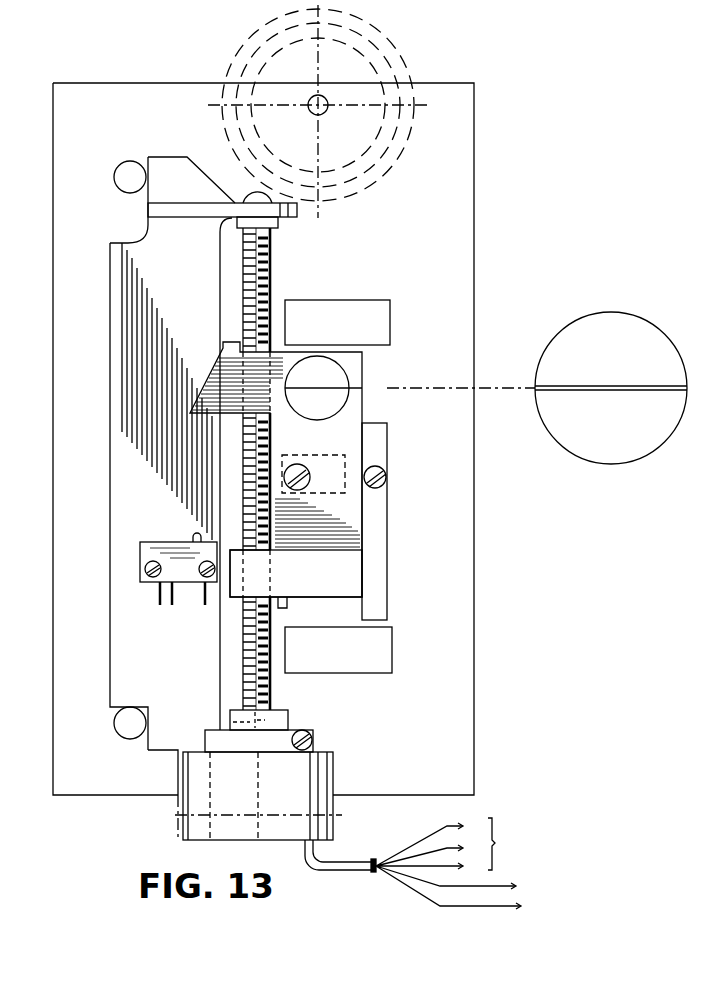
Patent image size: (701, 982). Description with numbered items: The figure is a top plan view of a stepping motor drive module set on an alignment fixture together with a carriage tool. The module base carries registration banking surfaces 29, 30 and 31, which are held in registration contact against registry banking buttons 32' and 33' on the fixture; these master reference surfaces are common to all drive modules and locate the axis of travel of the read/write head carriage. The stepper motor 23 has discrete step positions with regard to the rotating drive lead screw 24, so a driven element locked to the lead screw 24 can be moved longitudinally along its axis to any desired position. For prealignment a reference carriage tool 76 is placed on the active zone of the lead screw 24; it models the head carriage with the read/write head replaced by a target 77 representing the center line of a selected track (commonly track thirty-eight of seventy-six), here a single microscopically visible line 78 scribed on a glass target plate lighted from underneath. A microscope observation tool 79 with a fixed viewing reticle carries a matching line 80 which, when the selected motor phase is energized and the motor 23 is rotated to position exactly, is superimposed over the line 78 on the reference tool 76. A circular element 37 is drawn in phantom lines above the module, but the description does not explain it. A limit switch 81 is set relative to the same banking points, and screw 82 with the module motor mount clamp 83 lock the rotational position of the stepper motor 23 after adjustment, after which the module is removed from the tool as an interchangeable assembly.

The microscope observation tool 79 is at (53, 642).
The pulley 37 is at (326, 111).
The registration banking surface 29 is at (148, 205).
The registry banking button 32' is at (108, 155).
The registration banking surface 30 is at (112, 708).
The registration banking surface 31 is at (148, 748).
The registry banking button 33' is at (100, 736).
The lead screw 24 is at (243, 286).
The target 77 is at (346, 378).
The scribed line 78 is at (338, 398).
The reference carriage tool 76 is at (348, 569).
The matching line 80 is at (553, 392).
The limit switch 81 is at (160, 542).
The screw 82 is at (313, 740).
The module motor mount clamp 83 is at (272, 750).
The stepper motor 23 is at (336, 806).